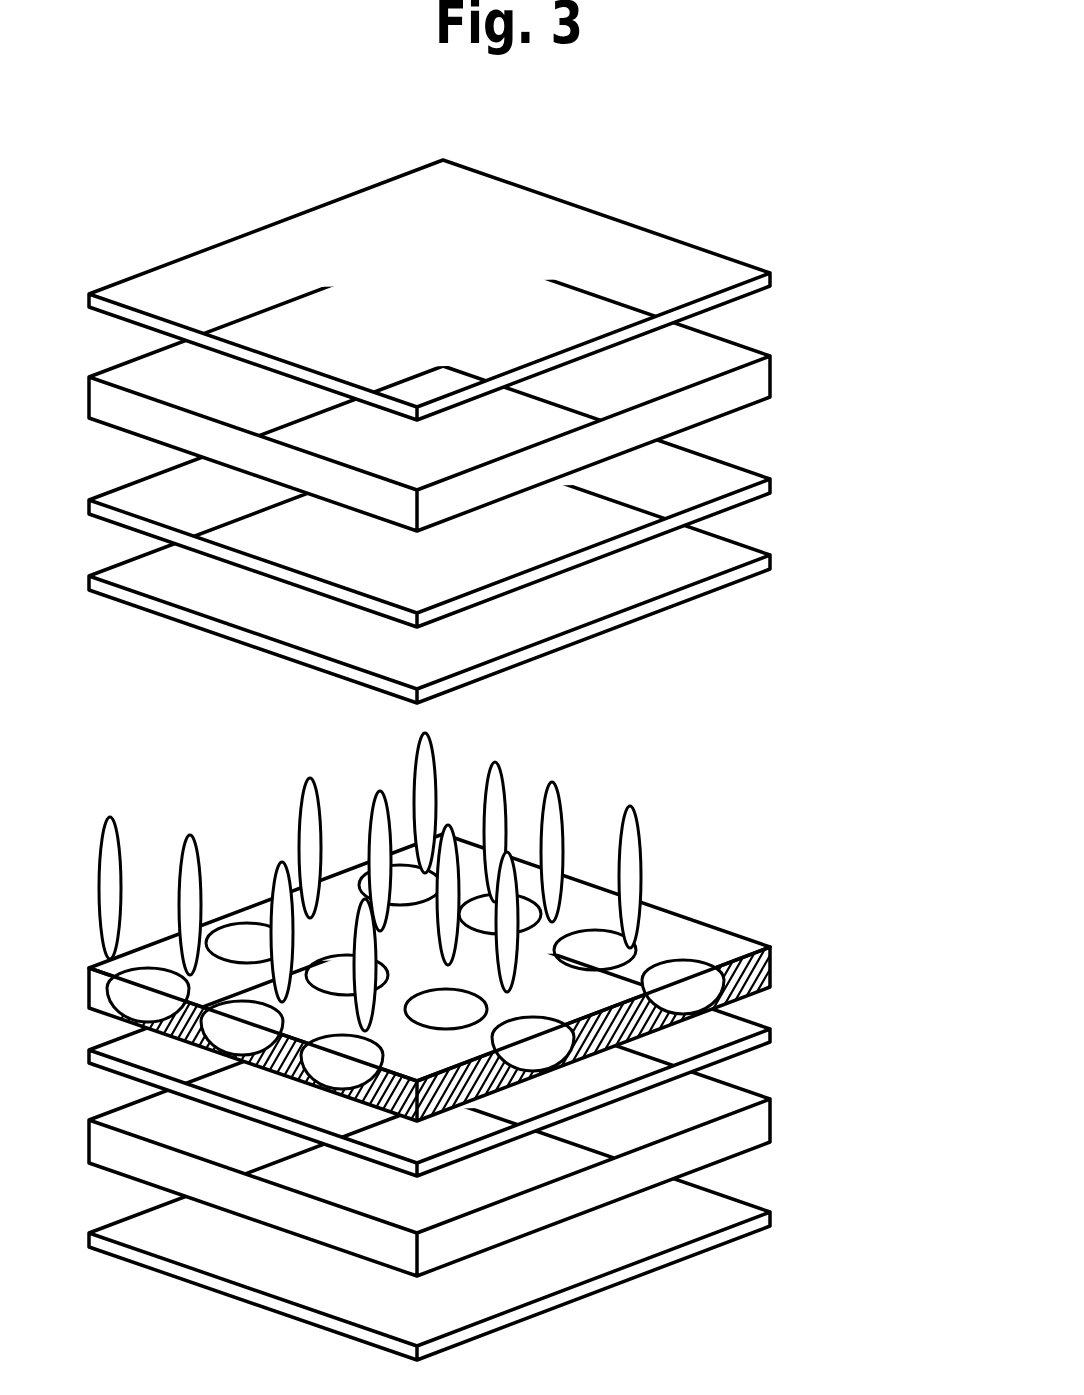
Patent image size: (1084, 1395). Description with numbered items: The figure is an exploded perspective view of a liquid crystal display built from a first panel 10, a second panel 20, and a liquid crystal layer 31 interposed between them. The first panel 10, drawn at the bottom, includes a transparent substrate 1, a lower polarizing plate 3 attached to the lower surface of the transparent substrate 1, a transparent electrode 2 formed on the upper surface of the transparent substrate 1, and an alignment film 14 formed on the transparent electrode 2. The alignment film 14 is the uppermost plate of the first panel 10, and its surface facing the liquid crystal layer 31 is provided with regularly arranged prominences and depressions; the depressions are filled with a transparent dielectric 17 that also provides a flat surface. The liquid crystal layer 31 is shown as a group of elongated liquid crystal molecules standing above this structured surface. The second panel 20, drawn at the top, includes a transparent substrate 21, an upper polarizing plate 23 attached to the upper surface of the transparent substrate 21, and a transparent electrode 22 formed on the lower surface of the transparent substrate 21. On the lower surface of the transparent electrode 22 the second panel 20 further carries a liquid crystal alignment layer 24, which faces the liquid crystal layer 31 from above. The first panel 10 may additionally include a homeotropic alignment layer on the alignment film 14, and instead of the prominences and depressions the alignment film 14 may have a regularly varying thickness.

The transparent substrate 1 is at (772, 1114).
The transparent electrode 2 is at (459, 1046).
The lower polarizing plate 3 is at (772, 1216).
The first panel 10 is at (502, 1138).
The alignment film 14 is at (474, 979).
The transparent dielectric 17 is at (648, 946).
The second panel 20 is at (510, 393).
The transparent substrate 21 is at (772, 380).
The transparent electrode 22 is at (772, 484).
The upper polarizing plate 23 is at (467, 290).
The liquid crystal alignment layer 24 is at (772, 560).
The liquid crystal layer 31 is at (641, 848).